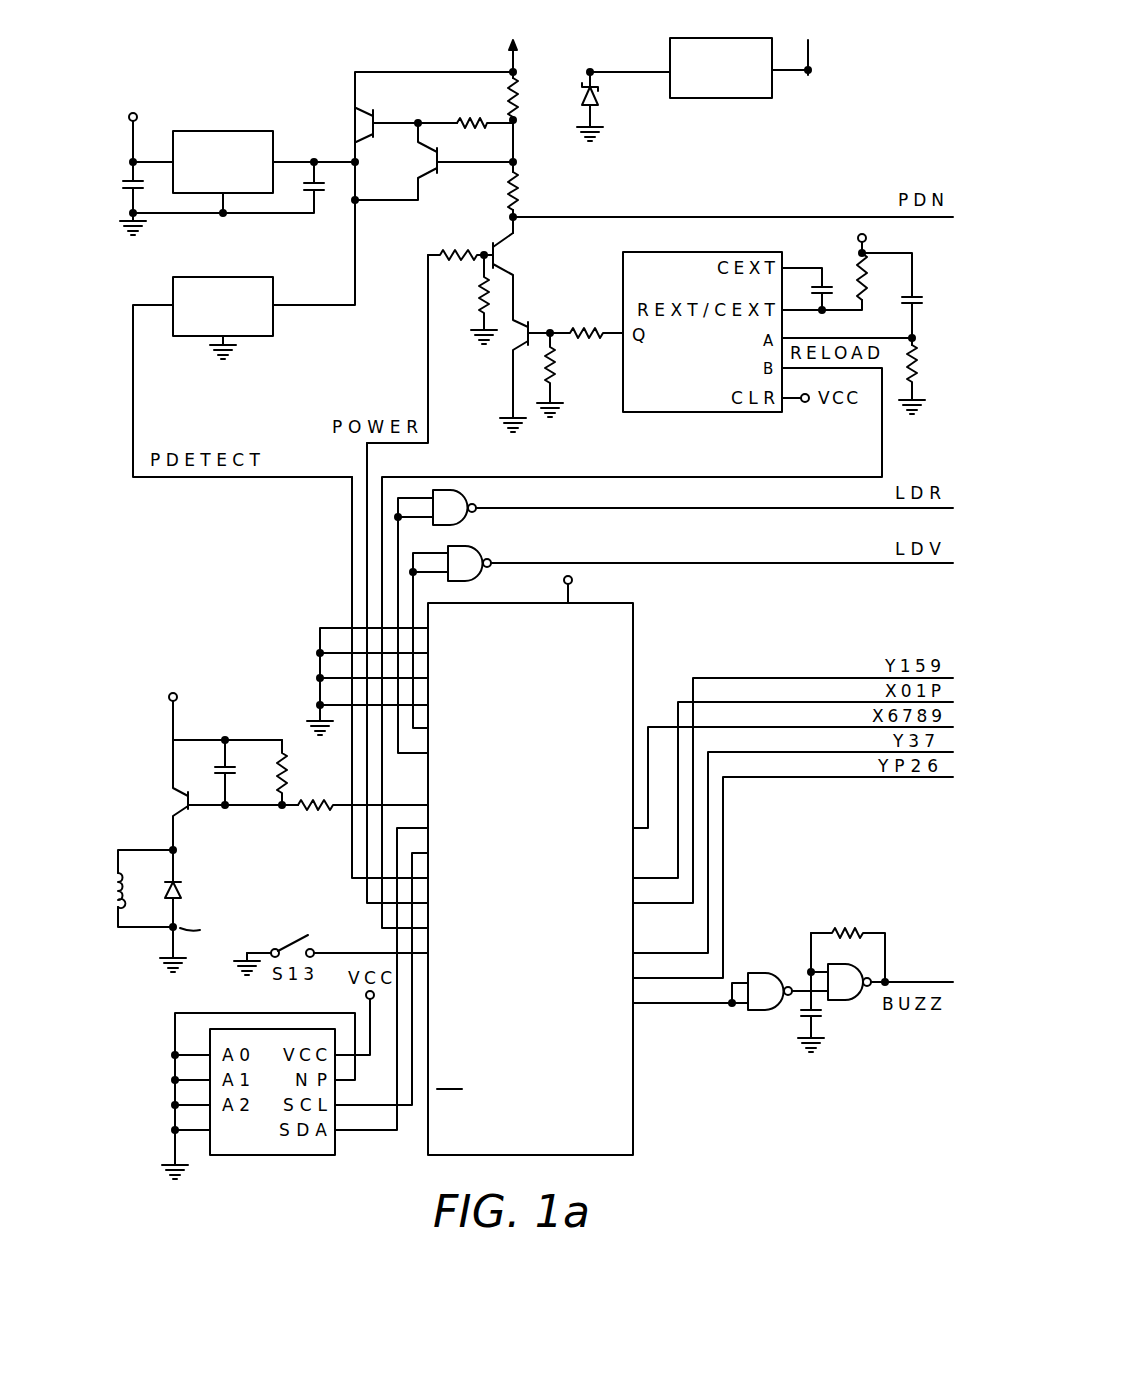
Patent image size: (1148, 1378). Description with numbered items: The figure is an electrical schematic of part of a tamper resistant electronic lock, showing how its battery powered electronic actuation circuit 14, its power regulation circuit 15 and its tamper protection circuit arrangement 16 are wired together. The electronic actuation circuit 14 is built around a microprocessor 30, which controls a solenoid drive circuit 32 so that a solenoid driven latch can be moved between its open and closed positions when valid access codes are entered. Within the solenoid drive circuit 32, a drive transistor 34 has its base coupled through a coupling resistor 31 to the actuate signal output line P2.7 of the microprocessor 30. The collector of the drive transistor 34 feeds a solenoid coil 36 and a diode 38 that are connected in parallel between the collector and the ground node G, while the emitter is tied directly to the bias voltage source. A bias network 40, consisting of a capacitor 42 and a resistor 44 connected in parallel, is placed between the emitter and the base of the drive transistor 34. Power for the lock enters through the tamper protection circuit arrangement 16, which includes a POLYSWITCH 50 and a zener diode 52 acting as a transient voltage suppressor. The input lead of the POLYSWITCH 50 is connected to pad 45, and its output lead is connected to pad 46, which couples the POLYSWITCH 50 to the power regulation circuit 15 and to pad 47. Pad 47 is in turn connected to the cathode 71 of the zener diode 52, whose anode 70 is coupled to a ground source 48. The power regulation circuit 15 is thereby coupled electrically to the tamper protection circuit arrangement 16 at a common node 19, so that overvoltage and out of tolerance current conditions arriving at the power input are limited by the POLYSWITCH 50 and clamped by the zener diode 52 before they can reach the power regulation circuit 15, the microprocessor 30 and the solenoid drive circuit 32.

The electronic actuation circuit 14 is at (215, 678).
The power regulation circuit 15 is at (114, 132).
The tamper protection circuit arrangement 16 is at (828, 55).
The common node 19 is at (511, 71).
The microprocessor 30 is at (633, 1120).
The coupling resistor 31 is at (312, 812).
The solenoid drive circuit 32 is at (162, 718).
The drive transistor 34 is at (193, 808).
The solenoid coil 36 is at (133, 887).
The diode 38 is at (183, 890).
The bias network 40 is at (272, 728).
The capacitor 42 is at (255, 777).
The resistor 44 is at (288, 778).
The pad 45 is at (808, 75).
The pad 46 is at (628, 66).
The pad 47 is at (582, 80).
The ground source 48 is at (588, 143).
The POLYSWITCH 50 is at (718, 98).
The zener diode 52 is at (578, 100).
The anode 70 is at (603, 101).
The cathode 71 is at (603, 91).